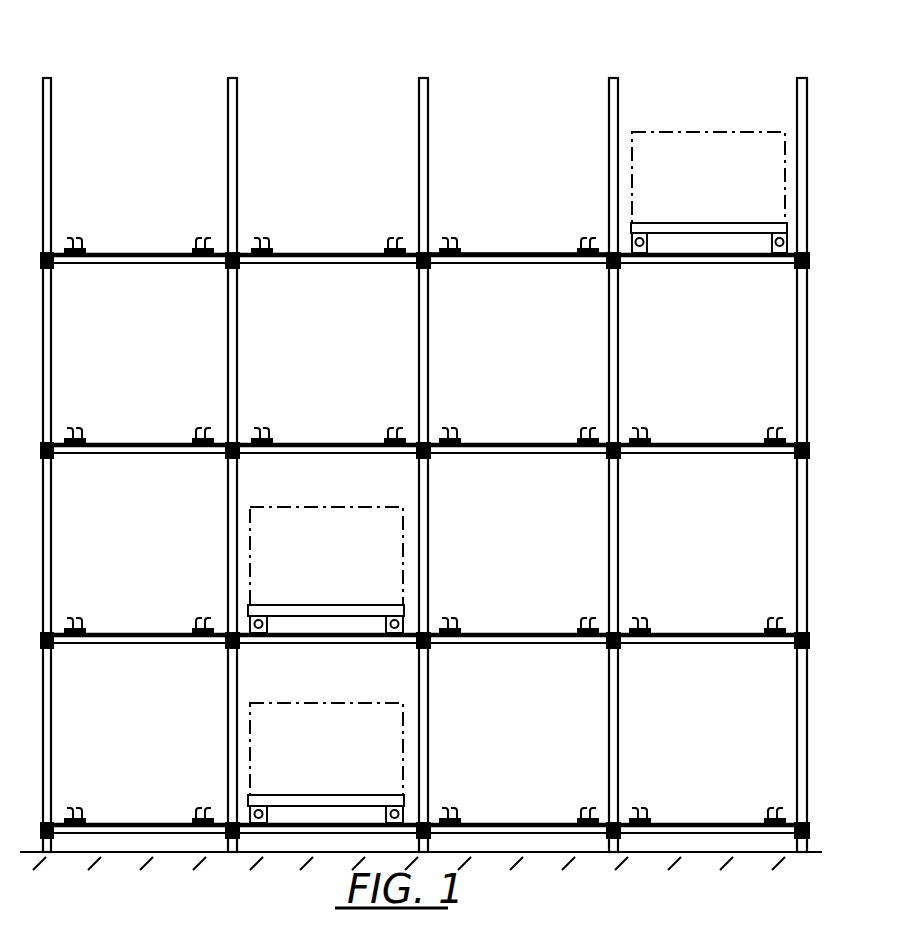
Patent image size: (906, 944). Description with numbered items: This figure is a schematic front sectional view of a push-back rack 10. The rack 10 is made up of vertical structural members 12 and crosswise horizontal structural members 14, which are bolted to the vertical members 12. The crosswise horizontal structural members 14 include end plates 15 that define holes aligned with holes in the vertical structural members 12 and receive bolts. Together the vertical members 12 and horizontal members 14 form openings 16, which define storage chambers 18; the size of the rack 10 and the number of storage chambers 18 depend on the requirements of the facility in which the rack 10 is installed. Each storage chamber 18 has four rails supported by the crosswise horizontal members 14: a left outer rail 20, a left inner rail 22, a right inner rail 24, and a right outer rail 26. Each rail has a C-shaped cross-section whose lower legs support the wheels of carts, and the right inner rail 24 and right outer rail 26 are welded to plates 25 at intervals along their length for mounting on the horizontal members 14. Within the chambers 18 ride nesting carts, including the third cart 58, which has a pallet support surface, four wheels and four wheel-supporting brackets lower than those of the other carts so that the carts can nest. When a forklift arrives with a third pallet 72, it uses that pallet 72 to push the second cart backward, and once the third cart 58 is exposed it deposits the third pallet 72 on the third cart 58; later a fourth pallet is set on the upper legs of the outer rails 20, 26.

The rack 10 is at (432, 0).
The vertical structural members 12 is at (228, 93).
The crosswise horizontal structural members 14 is at (133, 268).
The end plates 15 is at (430, 250).
The openings 16 is at (800, 322).
The storage chambers 18 is at (158, 205).
The left outer rail 20 is at (259, 240).
The left inner rail 22 is at (264, 240).
The right inner rail 24 is at (385, 240).
The plates 25 is at (455, 253).
The right outer rail 26 is at (398, 240).
The third cart 58 is at (722, 240).
The third pallet 72 is at (698, 131).